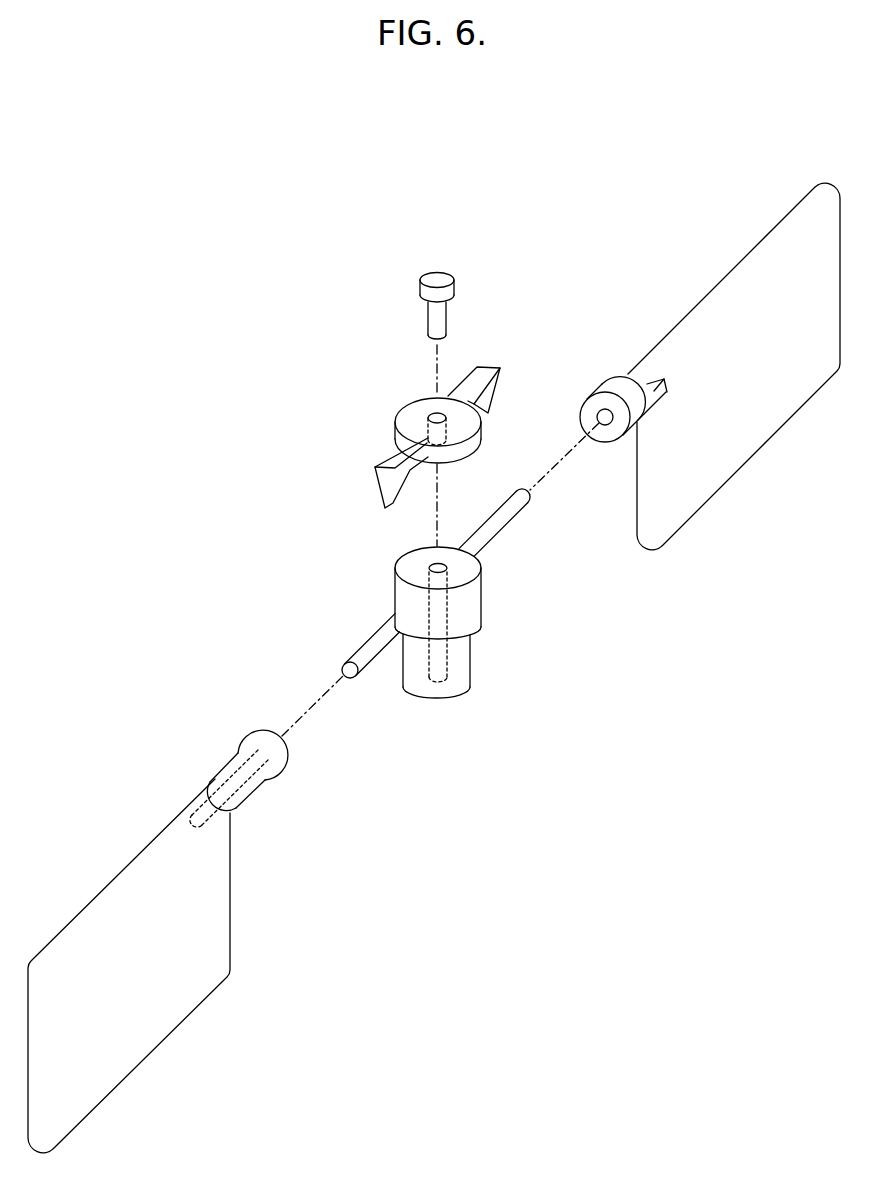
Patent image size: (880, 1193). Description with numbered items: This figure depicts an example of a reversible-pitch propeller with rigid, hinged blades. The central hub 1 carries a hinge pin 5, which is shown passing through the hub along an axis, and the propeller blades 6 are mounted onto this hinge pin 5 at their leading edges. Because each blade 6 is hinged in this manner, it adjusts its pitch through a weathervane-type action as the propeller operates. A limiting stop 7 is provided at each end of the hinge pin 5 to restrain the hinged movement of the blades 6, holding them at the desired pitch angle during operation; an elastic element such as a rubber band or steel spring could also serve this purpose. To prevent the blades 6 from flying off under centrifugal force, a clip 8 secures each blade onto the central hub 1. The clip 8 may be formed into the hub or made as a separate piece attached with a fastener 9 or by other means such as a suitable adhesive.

The central hub 1 is at (482, 603).
The hinge pin 5 is at (362, 647).
The propeller blades 6 is at (732, 369).
The limiting stop 7 is at (660, 397).
The clip 8 is at (397, 415).
The fastener 9 is at (417, 287).